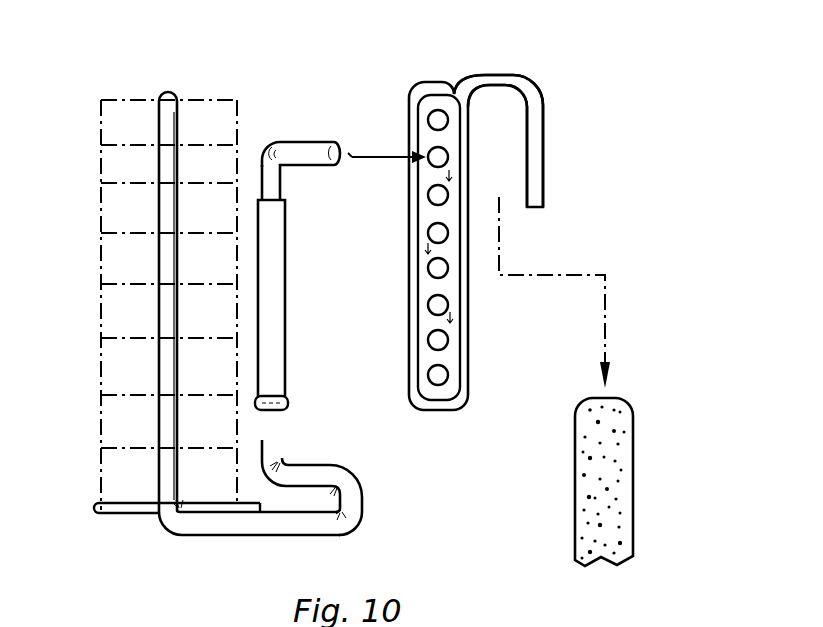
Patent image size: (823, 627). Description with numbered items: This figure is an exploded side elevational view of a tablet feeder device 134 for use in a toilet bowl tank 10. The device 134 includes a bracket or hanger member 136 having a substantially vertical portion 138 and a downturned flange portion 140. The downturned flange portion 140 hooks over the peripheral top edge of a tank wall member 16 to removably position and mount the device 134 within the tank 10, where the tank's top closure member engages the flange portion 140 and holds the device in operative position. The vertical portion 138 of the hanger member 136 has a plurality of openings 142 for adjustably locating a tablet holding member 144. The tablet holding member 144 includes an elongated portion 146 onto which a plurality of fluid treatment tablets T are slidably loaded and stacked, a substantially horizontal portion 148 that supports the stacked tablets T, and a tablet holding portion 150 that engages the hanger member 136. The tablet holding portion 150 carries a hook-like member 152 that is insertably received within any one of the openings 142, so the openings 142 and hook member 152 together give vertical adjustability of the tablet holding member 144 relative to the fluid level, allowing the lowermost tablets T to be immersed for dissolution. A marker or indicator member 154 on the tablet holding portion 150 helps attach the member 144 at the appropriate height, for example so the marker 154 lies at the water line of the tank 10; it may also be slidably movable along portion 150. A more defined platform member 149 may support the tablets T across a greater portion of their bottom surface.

The toilet bowl tank 10 is at (668, 512).
The wall member 16 is at (633, 450).
The tablet feeder device 134 is at (203, 70).
The hanger member 136 is at (477, 214).
The vertical portion 138 is at (409, 218).
The downturned flange portion 140 is at (543, 180).
The openings 142 is at (446, 152).
The tablet holding member 144 is at (237, 543).
The elongated portion 146 is at (158, 212).
The horizontal portion 148 is at (290, 535).
The platform member 149 is at (137, 514).
The tablet holding portion 150 is at (290, 299).
The hook-like member 152 is at (338, 142).
The marker or indicator member 154 is at (288, 403).
The fluid treatment tablets T is at (100, 296).